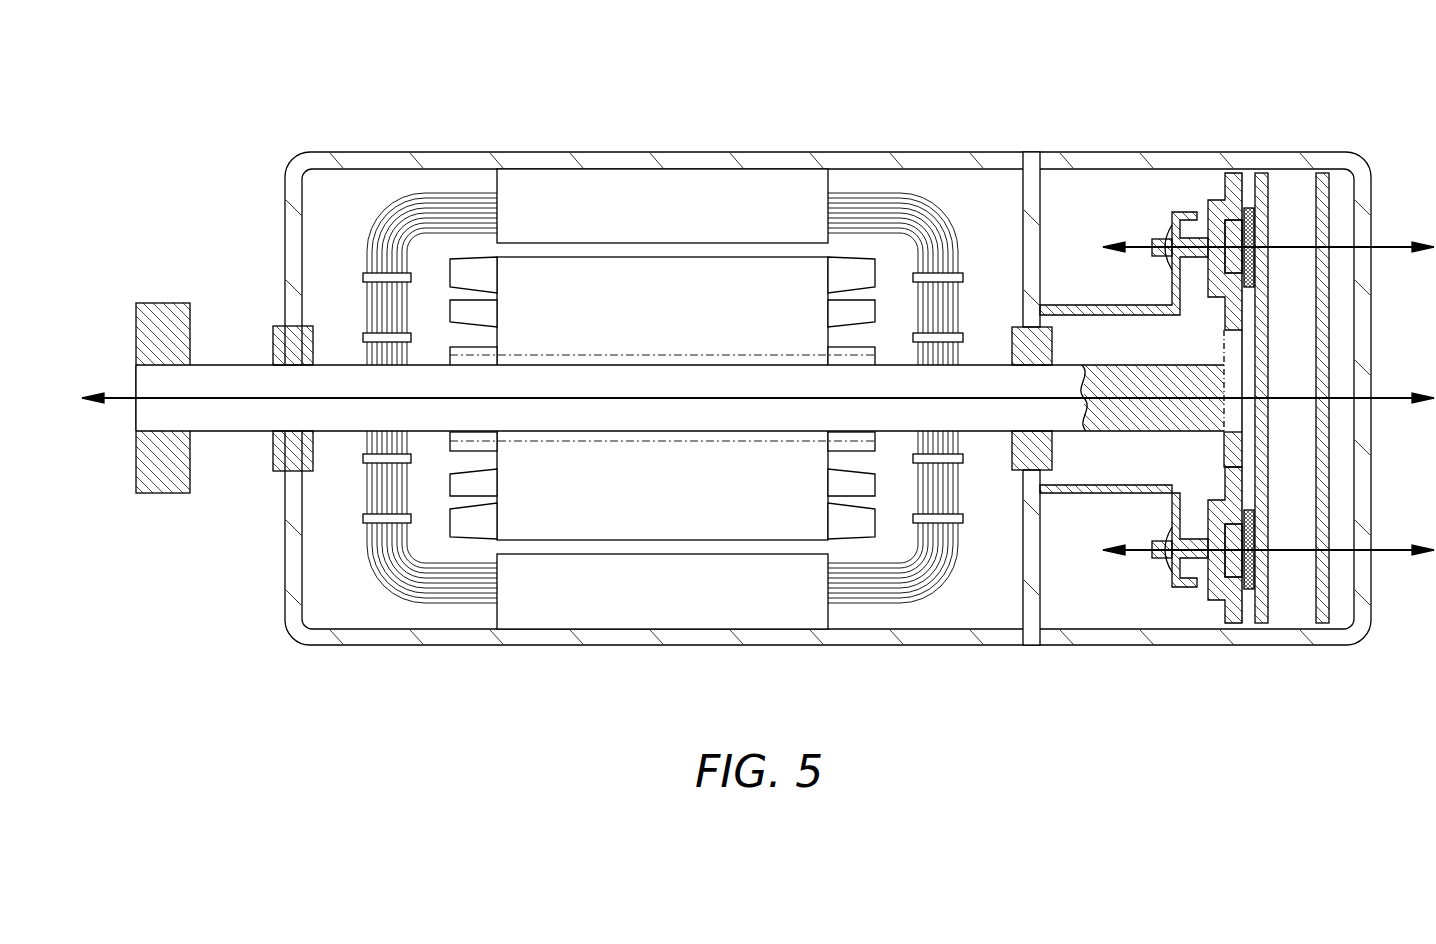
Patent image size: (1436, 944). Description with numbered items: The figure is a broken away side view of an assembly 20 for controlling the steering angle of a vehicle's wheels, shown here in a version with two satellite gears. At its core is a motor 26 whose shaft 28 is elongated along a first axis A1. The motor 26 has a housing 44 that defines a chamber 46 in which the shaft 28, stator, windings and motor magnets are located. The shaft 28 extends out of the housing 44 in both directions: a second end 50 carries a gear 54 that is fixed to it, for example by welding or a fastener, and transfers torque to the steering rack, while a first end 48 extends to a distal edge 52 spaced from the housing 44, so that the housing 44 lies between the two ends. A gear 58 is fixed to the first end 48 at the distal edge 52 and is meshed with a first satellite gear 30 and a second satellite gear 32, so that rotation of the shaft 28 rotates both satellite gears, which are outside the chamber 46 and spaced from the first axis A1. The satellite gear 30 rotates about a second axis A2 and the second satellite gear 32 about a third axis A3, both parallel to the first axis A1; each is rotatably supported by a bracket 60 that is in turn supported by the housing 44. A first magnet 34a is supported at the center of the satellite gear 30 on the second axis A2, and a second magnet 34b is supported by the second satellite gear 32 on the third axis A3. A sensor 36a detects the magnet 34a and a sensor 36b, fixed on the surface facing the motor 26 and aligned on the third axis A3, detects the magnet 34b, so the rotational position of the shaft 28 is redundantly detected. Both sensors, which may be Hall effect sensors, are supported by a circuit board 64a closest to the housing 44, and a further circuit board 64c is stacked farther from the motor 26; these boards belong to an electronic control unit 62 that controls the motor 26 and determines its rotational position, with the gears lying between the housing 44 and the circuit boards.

The assembly 20 is at (1288, 62).
The motor 26 is at (686, 339).
The shaft 28 is at (979, 420).
The first gear 30 is at (1298, 402).
The second gear 32 is at (1232, 621).
The first magnet 34a is at (1228, 172).
The second magnet 34b is at (1235, 560).
The sensor 36a is at (1250, 222).
The sensor 36b is at (1250, 530).
The housing 44 is at (387, 151).
The chamber 46 is at (980, 200).
The first end 48 is at (1136, 408).
The second end 50 is at (145, 380).
The distal edge 52 is at (1245, 387).
The gear 54 is at (160, 303).
The gear 58 is at (1225, 460).
The bracket 60 is at (1090, 304).
The electronic control unit 62 is at (1345, 428).
The circuit board 64a is at (1268, 610).
The circuit board 64c is at (1329, 608).
The first axis A1 is at (1390, 400).
The second axis A2 is at (1390, 250).
The third axis A3 is at (1390, 552).